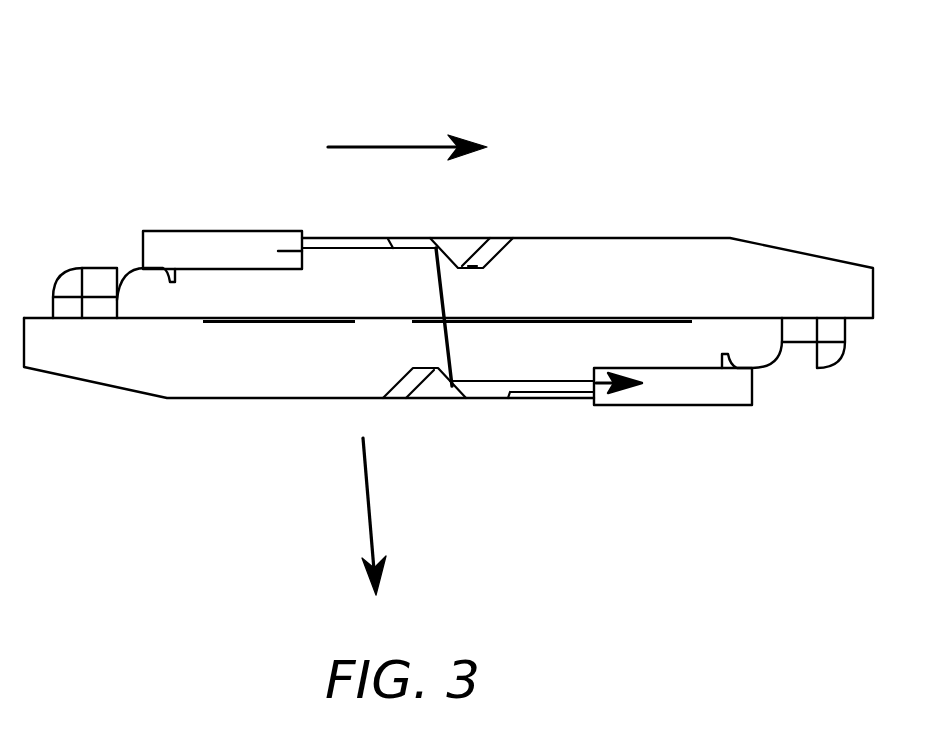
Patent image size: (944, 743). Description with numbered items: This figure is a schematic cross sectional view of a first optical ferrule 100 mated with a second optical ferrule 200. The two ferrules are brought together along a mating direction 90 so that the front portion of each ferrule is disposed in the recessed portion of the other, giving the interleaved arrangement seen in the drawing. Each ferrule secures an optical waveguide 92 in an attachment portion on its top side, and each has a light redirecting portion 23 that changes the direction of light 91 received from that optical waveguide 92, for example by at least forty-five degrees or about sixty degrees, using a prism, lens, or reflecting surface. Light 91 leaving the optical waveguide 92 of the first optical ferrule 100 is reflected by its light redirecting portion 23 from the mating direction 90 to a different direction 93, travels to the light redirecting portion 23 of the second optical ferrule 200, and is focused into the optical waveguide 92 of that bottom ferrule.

The first optical ferrule 100 is at (777, 266).
The second optical ferrule 200 is at (155, 372).
The optical waveguide 92 is at (214, 231).
The light 91 is at (407, 253).
The light redirecting portion 23 is at (440, 252).
The mating direction 90 is at (381, 147).
The different direction 93 is at (365, 482).